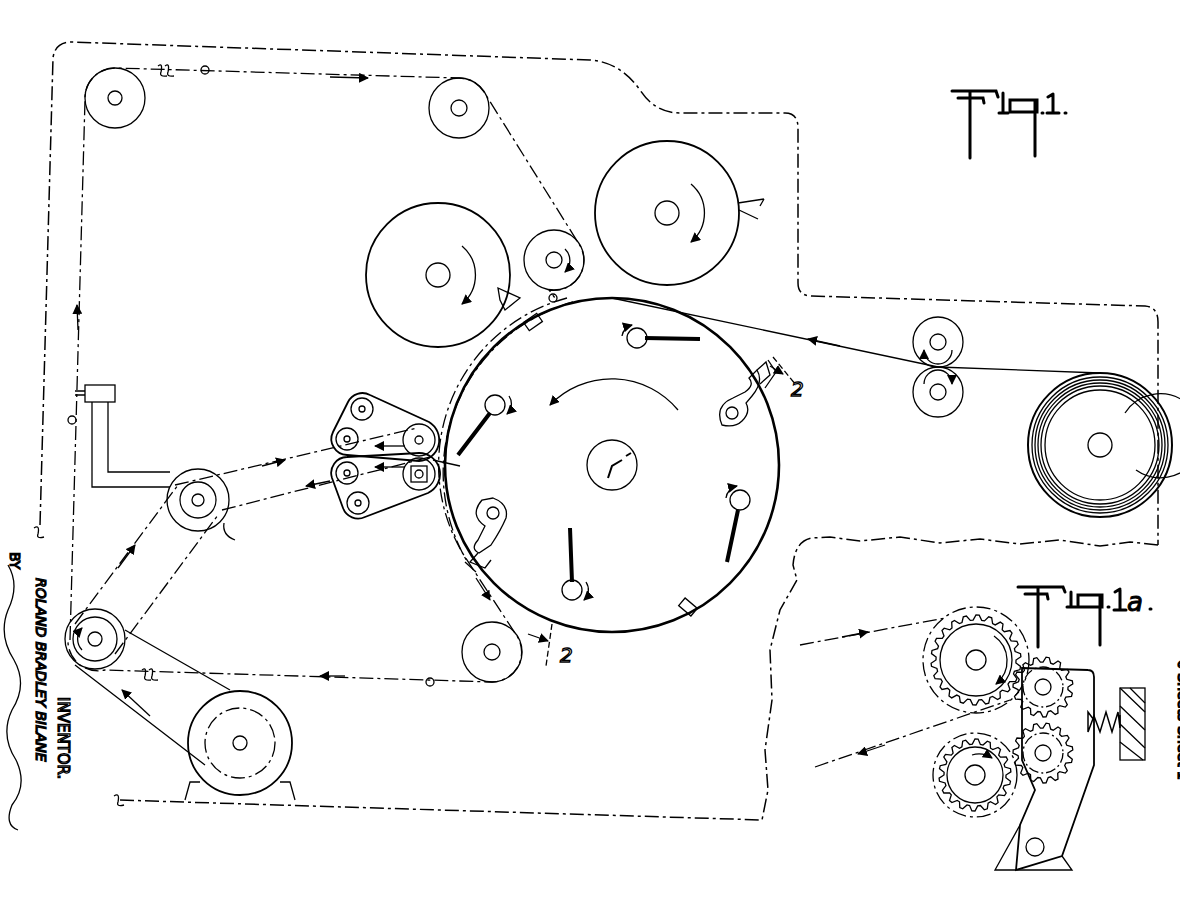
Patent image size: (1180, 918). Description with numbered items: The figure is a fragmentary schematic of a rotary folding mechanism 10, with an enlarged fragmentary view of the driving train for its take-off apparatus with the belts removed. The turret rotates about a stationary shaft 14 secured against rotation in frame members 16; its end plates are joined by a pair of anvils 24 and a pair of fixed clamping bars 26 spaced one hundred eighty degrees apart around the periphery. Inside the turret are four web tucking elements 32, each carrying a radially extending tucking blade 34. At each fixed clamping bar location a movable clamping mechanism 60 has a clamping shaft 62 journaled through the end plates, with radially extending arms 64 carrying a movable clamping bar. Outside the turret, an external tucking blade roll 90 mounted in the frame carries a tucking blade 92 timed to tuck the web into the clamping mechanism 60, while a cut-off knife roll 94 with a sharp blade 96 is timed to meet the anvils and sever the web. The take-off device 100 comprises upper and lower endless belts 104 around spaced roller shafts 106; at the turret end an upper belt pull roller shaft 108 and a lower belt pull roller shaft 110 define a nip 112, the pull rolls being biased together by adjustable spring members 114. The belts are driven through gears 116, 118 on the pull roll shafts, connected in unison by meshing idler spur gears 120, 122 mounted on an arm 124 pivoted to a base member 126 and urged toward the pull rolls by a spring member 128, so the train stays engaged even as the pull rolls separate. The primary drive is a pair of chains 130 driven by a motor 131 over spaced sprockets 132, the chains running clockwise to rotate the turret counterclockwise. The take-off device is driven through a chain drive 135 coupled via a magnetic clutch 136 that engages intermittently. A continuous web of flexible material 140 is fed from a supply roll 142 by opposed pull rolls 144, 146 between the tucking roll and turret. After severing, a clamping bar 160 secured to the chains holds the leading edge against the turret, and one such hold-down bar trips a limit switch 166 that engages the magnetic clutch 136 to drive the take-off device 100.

In FIG. 1, the rotary folding mechanism 10 is at (825, 265).
In FIG. 1, the stationary shaft 14 is at (613, 448).
In FIG. 1, the frame members 16 is at (47, 212).
In FIG. 1, the anvils 24 is at (752, 418).
In FIG. 1, the fixed clamping bars 26 is at (543, 322).
In FIG. 1, the web tucking elements 32 is at (500, 394).
In FIG. 1, the tucking blade 34 is at (686, 333).
In FIG. 1, the movable clamping mechanism 60 is at (712, 399).
In FIG. 1, the clamping shaft 62 is at (722, 420).
In FIG. 1, the radially extending arms 64 is at (742, 388).
In FIG. 1, the external tucking blade roll 90 is at (716, 164).
In FIG. 1, the tucking blade 92 is at (752, 208).
In FIG. 1, the cut-off knife roll 94 is at (440, 212).
In FIG. 1, the sharp blade 96 is at (490, 298).
In FIG. 1, the take-off device 100 is at (375, 392).
In FIG. 1, the lower endless belts 104 is at (345, 500).
In FIG. 1, the roller shafts 106 is at (366, 414).
In FIG. 1, the upper belt pull roller shaft 108 is at (424, 424).
In FIG. 1A, the upper belt pull roller shaft 108 is at (966, 664).
In FIG. 1, the lower belt pull roller shaft 110 is at (420, 492).
In FIG. 1A, the lower belt pull roller shaft 110 is at (965, 776).
In FIG. 1, the nip 112 is at (465, 461).
In FIG. 1, the adjustable spring members 114 is at (414, 490).
In FIG. 1A, the upper pull roll gear 116 is at (972, 632).
In FIG. 1A, the lower pull roll gear 118 is at (958, 796).
In FIG. 1A, the upper idler gear 120 is at (1058, 665).
In FIG. 1A, the lower idler gear 122 is at (1068, 770).
In FIG. 1A, the idler gear pivot arm 124 is at (1060, 808).
In FIG. 1A, the base member 126 is at (1066, 866).
In FIG. 1A, the spring member 128 is at (1100, 712).
In FIG. 1, the driving chains 130 is at (328, 76).
In FIG. 1, the motor 131 is at (283, 740).
In FIG. 1, the sprockets 132 is at (160, 116).
In FIG. 1, the chain drive 135 is at (262, 464).
In FIG. 1A, the chain drive 135 is at (826, 640).
In FIG. 1, the magnetic clutch 136 is at (198, 469).
In FIG. 1, the continuous web of flexible material 140 is at (1020, 370).
In FIG. 1, the supply roll 142 is at (1030, 460).
In FIG. 1, the pull roll 144 is at (962, 336).
In FIG. 1, the pull roll 146 is at (964, 390).
In FIG. 1, the clamping bar 160 is at (205, 74).
In FIG. 1, the limit switch 166 is at (104, 384).